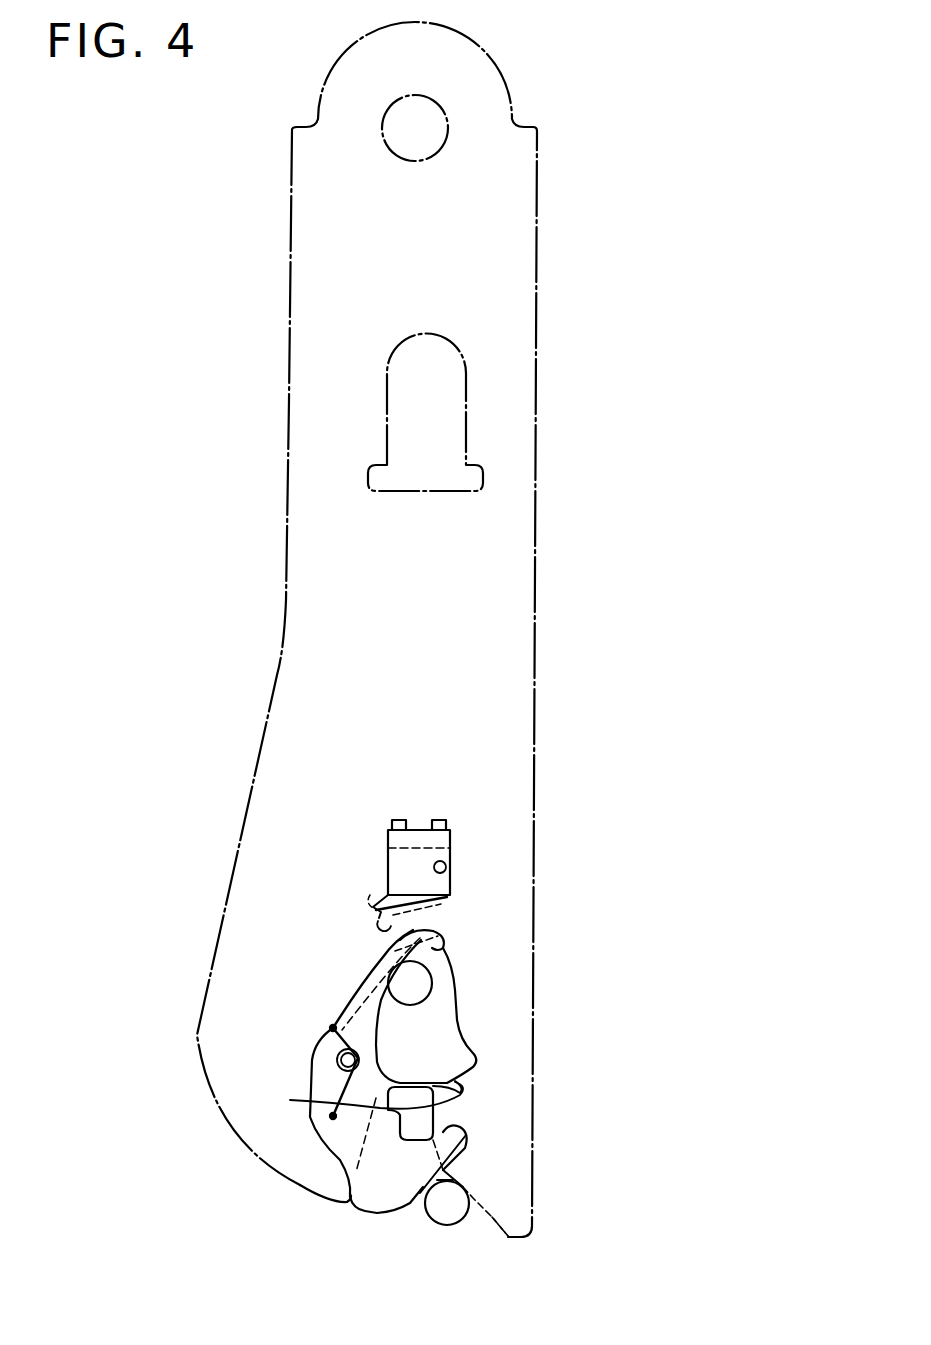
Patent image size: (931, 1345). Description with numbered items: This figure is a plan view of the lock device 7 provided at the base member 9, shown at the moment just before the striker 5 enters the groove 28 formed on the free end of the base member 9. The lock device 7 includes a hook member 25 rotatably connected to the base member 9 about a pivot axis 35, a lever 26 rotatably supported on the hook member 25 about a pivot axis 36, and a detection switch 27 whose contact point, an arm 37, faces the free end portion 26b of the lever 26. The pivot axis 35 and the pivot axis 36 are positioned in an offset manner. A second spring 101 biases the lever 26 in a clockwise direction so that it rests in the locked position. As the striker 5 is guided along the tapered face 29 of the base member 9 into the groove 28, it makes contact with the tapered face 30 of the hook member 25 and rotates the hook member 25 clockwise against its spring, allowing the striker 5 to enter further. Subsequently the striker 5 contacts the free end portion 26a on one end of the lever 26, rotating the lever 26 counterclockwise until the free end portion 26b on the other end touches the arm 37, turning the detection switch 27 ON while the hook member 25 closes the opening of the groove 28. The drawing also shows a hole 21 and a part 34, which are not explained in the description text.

The base member 9 is at (545, 635).
The mounting hole 21 is at (446, 114).
The detection switch 27 is at (447, 867).
The arm 37 is at (372, 920).
The lock device 7 is at (505, 1046).
The free end portion 26b is at (443, 937).
The pivot axis 35 is at (432, 983).
The pivot axis 36 is at (337, 1060).
The lever 26 is at (352, 1117).
The second spring 101 is at (290, 1100).
The free end portion 26a is at (450, 1092).
The groove 28 is at (418, 1122).
The lever 34 is at (447, 1127).
The hook member 25 is at (360, 1225).
The tapered face 30 is at (423, 1190).
The striker 5 is at (447, 1218).
The tapered face 29 is at (490, 1222).